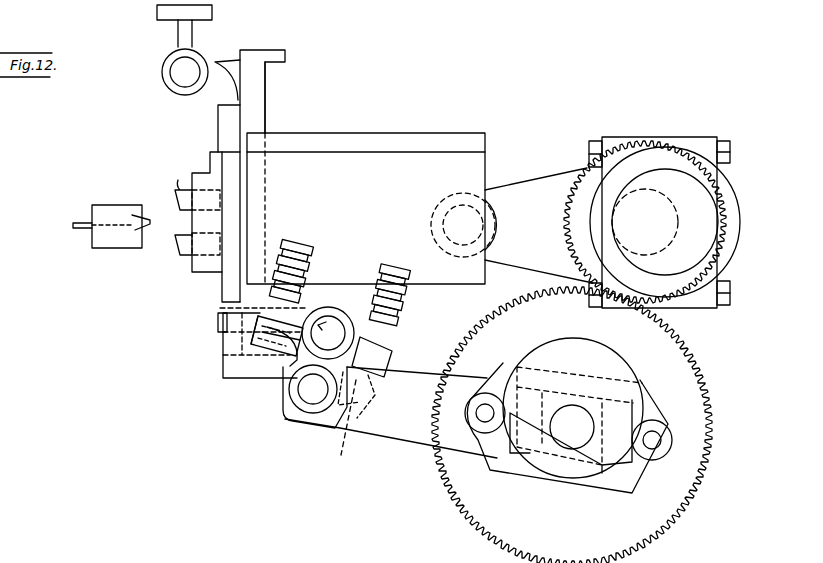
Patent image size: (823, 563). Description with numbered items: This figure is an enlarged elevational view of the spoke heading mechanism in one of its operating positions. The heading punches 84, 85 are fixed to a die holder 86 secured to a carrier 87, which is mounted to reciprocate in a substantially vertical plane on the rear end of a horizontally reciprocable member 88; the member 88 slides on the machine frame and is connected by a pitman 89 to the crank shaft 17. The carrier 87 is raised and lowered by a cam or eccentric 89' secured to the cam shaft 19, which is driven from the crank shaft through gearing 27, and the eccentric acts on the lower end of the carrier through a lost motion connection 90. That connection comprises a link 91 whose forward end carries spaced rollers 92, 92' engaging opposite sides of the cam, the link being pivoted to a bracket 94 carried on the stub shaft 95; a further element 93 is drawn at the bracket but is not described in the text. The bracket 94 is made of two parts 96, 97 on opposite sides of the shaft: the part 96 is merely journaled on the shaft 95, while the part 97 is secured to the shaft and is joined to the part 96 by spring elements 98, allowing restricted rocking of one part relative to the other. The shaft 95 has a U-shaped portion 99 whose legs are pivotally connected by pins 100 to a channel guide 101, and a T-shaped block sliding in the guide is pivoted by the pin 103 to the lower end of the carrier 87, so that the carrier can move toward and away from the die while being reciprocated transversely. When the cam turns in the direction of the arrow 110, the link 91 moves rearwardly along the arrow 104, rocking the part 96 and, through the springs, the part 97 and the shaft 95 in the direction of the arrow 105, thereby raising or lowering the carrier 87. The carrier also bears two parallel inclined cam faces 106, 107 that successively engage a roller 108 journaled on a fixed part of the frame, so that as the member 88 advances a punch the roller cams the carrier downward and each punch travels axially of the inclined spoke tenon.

The crank shaft 17 is at (667, 227).
The cam shaft 19 is at (575, 443).
The gearing 27 is at (703, 326).
The heading punch 84 is at (204, 210).
The heading punch 85 is at (183, 257).
The die holder 86 is at (207, 272).
The carrier 87 is at (257, 110).
The horizontally reciprocable member 88 is at (465, 167).
The pitman 89 is at (539, 214).
The cam or eccentric 89' is at (567, 415).
The lost motion connection 90 is at (393, 355).
The link 91 is at (417, 435).
The roller 92 is at (489, 454).
The roller 92' is at (654, 461).
The roller 93 is at (305, 400).
The bracket 94 is at (283, 407).
The stub shaft 95 is at (337, 318).
The bracket part 96 is at (287, 375).
The bracket part 97 is at (307, 293).
The spring elements 98 is at (407, 313).
The U-shaped portion 99 is at (350, 432).
The pins 100 is at (262, 338).
The channel guide 101 is at (257, 355).
The pin 103 is at (213, 328).
The arrow 104 is at (371, 449).
The arrow 105 is at (320, 307).
The cam face 106 is at (230, 60).
The cam face 107 is at (216, 105).
The roller 108 is at (204, 57).
The arrow 110 is at (630, 326).